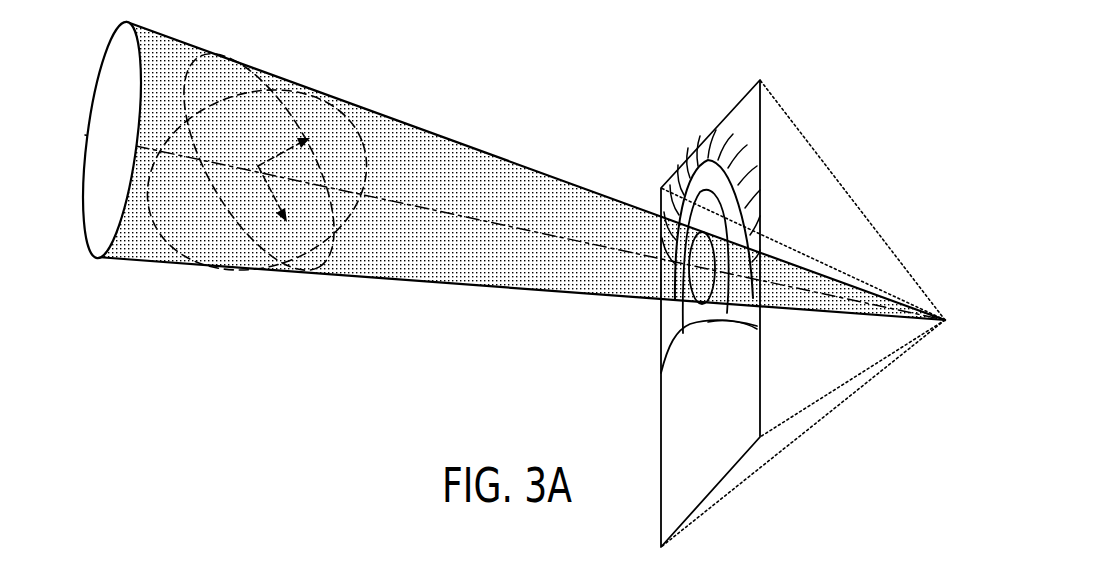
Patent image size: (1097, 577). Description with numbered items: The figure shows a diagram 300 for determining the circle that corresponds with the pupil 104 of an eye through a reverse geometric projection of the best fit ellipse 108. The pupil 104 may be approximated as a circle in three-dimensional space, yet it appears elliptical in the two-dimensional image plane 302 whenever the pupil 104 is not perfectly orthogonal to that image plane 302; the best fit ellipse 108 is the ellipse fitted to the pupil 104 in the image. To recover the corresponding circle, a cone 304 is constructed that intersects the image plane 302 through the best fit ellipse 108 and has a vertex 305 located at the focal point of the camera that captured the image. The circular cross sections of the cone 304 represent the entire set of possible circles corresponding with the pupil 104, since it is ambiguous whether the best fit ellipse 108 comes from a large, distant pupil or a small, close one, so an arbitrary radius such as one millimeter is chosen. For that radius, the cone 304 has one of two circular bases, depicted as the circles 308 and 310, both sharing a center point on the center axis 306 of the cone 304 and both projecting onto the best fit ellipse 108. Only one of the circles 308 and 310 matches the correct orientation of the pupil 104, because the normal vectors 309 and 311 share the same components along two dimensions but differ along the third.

The diagram 300 is at (856, 442).
The image plane 302 is at (740, 100).
The cone 304 is at (532, 170).
The vertex 305 is at (945, 320).
The center axis 306 is at (90, 135).
The circle 308 is at (203, 57).
The vector 309 is at (272, 162).
The circle 310 is at (243, 258).
The vector 311 is at (268, 200).
The pupil 104 is at (682, 298).
The best fit ellipse 108 is at (757, 325).